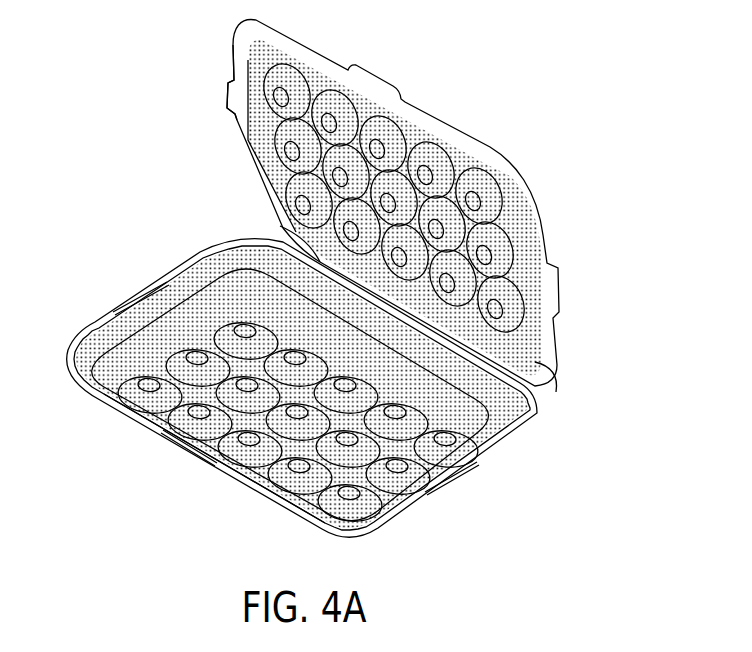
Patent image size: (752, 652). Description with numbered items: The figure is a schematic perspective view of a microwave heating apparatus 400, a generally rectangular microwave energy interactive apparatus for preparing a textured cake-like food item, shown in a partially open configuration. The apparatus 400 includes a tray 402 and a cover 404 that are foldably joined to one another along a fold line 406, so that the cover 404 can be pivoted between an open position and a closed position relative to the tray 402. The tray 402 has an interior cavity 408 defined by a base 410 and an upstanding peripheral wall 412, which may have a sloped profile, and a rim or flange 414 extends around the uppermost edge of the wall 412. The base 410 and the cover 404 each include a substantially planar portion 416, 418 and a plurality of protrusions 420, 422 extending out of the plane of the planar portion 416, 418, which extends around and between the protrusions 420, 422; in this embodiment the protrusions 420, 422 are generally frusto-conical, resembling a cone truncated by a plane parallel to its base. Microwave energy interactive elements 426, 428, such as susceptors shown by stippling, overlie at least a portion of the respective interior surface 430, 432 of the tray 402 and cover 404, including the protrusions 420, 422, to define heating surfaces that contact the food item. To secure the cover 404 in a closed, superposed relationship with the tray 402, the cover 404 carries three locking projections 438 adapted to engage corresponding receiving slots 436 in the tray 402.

The microwave heating apparatus 400 is at (556, 131).
The tray 402 is at (112, 217).
The cover 404 is at (211, 63).
The fold line 406 is at (282, 226).
The cavity 408 is at (143, 340).
The base 410 is at (155, 421).
The peripheral wall 412 is at (217, 280).
The rim or flange 414 is at (507, 447).
The planar portion 416 is at (233, 468).
The planar portion 418 is at (536, 378).
The protrusions 420 is at (377, 502).
The protrusions 422 is at (277, 183).
The microwave energy interactive element 426 is at (123, 338).
The microwave energy interactive element 428 is at (268, 143).
The interior surface 430 is at (236, 314).
The interior surface 432 is at (279, 59).
The receiving slots 436 is at (440, 477).
The locking projections 438 is at (231, 103).